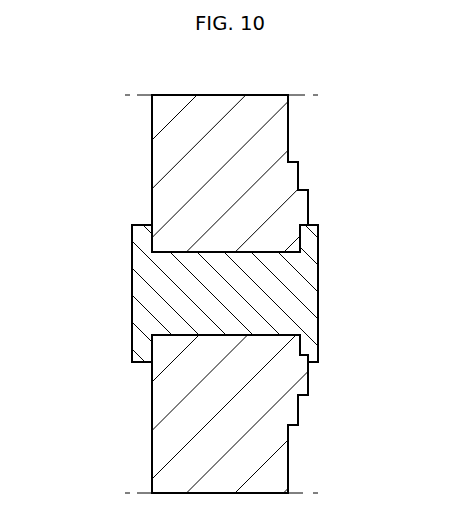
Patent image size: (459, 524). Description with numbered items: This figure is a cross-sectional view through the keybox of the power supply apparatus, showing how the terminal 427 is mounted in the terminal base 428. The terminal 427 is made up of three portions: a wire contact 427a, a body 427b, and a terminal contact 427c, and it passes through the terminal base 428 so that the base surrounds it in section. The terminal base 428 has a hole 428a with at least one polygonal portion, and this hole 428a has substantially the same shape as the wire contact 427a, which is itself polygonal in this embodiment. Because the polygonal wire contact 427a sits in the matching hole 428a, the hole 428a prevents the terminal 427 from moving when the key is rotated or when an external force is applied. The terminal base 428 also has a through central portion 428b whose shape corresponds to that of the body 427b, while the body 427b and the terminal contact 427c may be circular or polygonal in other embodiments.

The terminal base 428 is at (165, 150).
The terminal 427 is at (168, 281).
The wire contact 427a is at (318, 307).
The body 427b is at (273, 253).
The terminal contact 427c is at (138, 242).
The hole 428a is at (307, 358).
The through central portion 428b is at (188, 335).